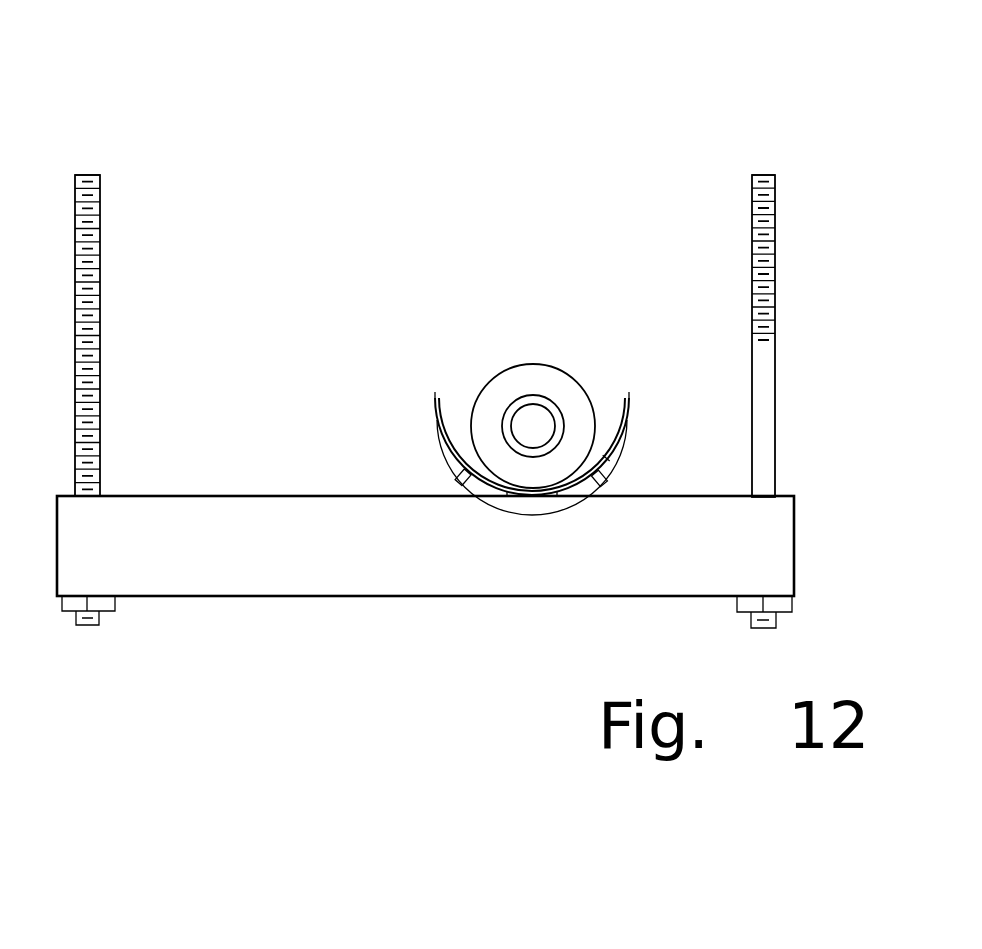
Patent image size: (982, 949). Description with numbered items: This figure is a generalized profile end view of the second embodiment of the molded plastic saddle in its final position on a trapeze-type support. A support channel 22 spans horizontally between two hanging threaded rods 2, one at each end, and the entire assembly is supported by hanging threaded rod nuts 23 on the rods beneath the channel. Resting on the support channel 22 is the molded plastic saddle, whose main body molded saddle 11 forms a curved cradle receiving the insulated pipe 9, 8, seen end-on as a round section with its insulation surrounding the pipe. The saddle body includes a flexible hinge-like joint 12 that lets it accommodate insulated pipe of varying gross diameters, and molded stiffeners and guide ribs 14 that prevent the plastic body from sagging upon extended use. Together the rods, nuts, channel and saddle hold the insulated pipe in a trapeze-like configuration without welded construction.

The hanging threaded rod 2 is at (100, 218).
The insulated pipe 8 is at (538, 393).
The insulated pipe 9 is at (503, 375).
The main body molded saddle 11 is at (433, 394).
The flexible hinge-like joint 12 is at (450, 453).
The molded stiffeners and guide ribs 14 is at (460, 492).
The support channel 22 is at (295, 596).
The hanging threaded rod nut 23 is at (62, 611).